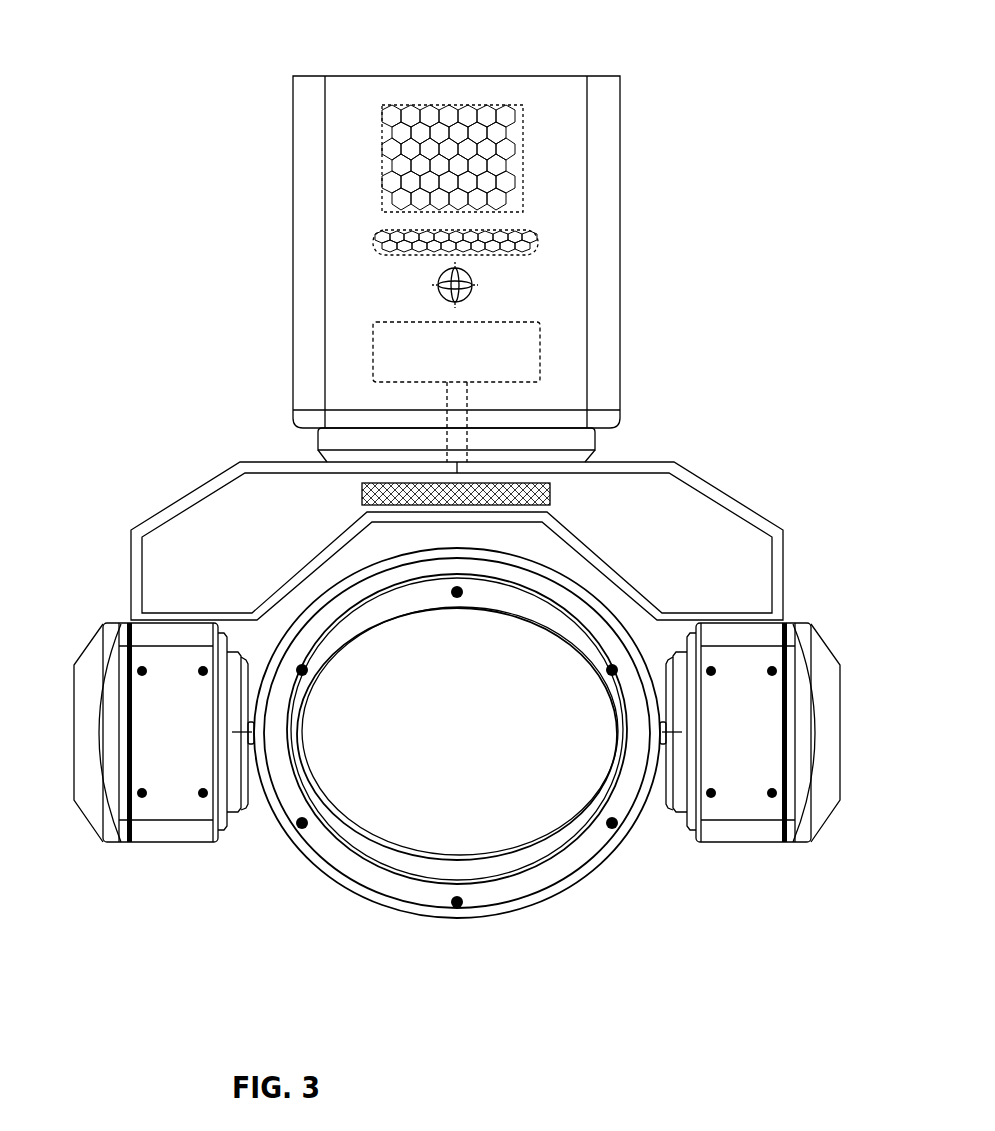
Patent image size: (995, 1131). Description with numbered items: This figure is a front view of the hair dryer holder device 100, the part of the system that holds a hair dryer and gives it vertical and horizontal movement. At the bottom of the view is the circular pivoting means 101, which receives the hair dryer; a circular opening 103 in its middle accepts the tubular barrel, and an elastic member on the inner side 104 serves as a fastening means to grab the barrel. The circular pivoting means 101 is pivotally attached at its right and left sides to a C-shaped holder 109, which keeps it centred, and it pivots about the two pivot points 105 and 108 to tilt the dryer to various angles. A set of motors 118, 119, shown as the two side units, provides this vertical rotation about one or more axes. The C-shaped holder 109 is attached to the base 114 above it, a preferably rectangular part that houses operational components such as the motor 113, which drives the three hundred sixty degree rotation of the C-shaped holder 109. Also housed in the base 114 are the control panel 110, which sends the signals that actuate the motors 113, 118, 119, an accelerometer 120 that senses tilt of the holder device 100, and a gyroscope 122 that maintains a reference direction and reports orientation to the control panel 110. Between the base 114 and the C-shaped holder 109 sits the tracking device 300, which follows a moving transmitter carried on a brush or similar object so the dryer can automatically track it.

The hair dryer holder device 100 is at (157, 73).
The circular pivoting means 101 is at (407, 888).
The circular opening 103 is at (378, 810).
The inner side 104 is at (510, 857).
The pivot point 105 is at (252, 790).
The pivot point 108 is at (655, 802).
The C-shaped holder 109 is at (168, 568).
The control panel 110 is at (398, 152).
The motor 113 is at (392, 348).
The base 114 is at (580, 117).
The motor 118 is at (743, 783).
The motor 119 is at (172, 790).
The accelerometer 120 is at (378, 238).
The gyroscope 122 is at (473, 285).
The tracking device 300 is at (560, 480).